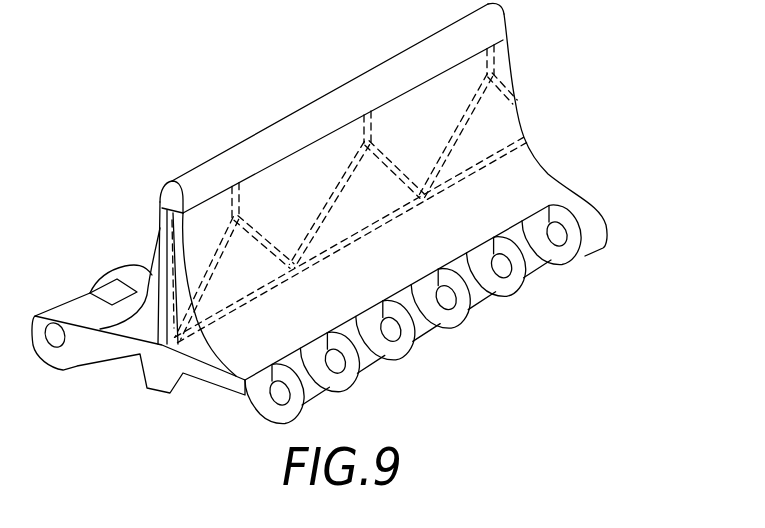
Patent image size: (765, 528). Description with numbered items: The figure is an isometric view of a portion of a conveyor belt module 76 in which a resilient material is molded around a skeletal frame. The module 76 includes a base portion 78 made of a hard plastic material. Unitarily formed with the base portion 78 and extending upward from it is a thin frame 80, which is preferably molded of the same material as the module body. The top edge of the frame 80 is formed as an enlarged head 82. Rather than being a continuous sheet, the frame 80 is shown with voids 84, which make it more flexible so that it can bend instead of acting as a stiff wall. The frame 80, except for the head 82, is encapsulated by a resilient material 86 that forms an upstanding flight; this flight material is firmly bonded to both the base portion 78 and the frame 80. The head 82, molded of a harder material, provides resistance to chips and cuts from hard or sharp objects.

The module 76 is at (150, 124).
The base portion 78 is at (199, 373).
The frame 80 is at (513, 66).
The head 82 is at (495, 20).
The voids 84 is at (501, 122).
The resilient material 86 is at (160, 233).